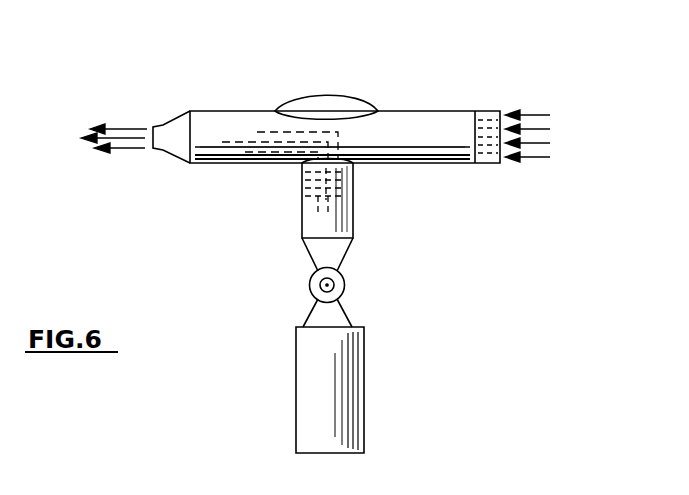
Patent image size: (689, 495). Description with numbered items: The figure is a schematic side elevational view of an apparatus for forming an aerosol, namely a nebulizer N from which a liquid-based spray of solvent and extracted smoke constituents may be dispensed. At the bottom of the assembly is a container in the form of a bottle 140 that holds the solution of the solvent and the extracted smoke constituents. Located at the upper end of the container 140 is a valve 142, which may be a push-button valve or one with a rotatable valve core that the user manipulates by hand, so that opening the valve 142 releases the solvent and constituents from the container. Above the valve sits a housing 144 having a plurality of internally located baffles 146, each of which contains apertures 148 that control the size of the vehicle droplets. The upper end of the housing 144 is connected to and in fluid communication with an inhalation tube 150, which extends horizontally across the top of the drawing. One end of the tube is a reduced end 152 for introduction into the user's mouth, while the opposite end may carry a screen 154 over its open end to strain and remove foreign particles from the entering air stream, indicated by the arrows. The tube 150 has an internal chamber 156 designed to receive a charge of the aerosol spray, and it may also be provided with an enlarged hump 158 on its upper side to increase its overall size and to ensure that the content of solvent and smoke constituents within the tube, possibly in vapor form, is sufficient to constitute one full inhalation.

The nebulizer N is at (457, 86).
The bottle 140 is at (348, 378).
The valve 142 is at (334, 285).
The housing 144 is at (335, 226).
The baffles 146 is at (355, 180).
The apertures 148 is at (300, 216).
The inhalation tube 150 is at (378, 111).
The reduced end 152 is at (176, 130).
The screen 154 is at (483, 118).
The internal chamber 156 is at (217, 133).
The enlarged hump 158 is at (310, 95).